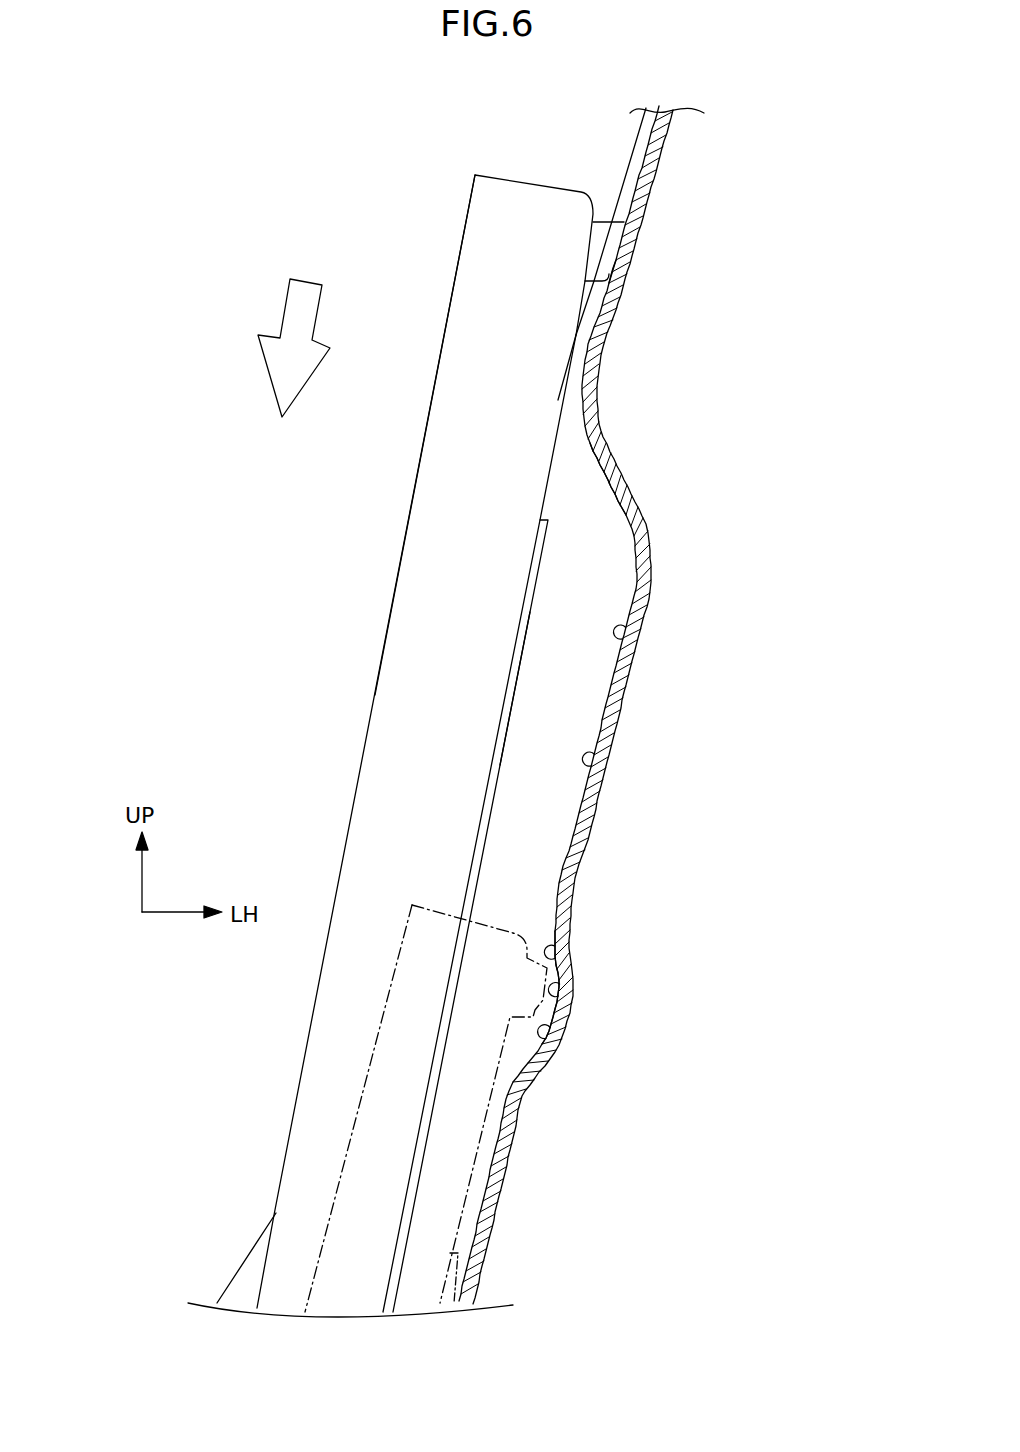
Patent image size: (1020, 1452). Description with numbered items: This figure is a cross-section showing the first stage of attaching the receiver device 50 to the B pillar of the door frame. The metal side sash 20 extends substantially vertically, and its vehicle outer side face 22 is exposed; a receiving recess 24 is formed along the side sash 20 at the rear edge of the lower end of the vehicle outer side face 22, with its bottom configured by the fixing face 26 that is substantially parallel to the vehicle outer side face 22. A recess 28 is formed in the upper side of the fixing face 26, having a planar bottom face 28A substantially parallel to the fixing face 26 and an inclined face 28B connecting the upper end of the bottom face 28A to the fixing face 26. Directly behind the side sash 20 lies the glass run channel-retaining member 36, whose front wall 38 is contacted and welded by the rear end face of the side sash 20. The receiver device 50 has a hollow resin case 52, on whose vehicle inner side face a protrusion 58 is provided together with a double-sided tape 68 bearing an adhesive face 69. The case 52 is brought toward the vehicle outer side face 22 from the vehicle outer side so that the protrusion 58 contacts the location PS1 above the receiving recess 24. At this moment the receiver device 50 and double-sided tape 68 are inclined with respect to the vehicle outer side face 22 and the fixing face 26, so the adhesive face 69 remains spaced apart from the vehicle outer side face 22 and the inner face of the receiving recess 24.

The side sash 20 is at (660, 158).
The vehicle outer side face 22 is at (647, 152).
The receiving recess 24 is at (623, 640).
The fixing face 26 is at (590, 763).
The recess 28 is at (560, 1045).
The bottom face 28A is at (560, 997).
The inclined face 28B is at (570, 952).
The glass run channel-retaining member 36 is at (575, 463).
The front wall 38 is at (607, 510).
The receiver device 50 is at (443, 168).
The case 52 is at (477, 257).
The protrusion 58 is at (610, 232).
The double-sided tape 68 is at (543, 550).
The adhesive face 69 is at (522, 680).
The location PS1 is at (630, 252).